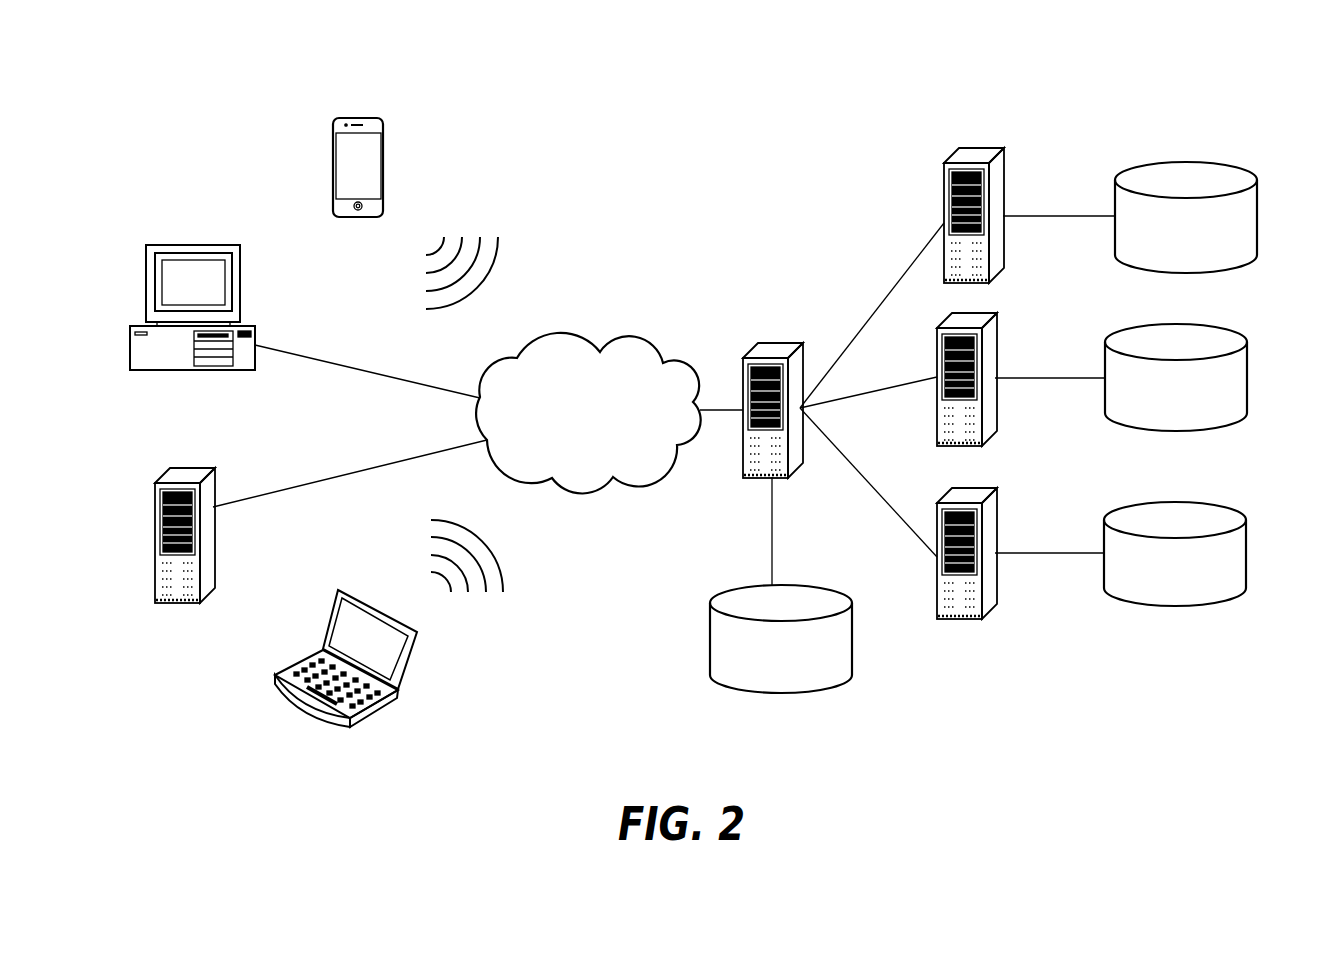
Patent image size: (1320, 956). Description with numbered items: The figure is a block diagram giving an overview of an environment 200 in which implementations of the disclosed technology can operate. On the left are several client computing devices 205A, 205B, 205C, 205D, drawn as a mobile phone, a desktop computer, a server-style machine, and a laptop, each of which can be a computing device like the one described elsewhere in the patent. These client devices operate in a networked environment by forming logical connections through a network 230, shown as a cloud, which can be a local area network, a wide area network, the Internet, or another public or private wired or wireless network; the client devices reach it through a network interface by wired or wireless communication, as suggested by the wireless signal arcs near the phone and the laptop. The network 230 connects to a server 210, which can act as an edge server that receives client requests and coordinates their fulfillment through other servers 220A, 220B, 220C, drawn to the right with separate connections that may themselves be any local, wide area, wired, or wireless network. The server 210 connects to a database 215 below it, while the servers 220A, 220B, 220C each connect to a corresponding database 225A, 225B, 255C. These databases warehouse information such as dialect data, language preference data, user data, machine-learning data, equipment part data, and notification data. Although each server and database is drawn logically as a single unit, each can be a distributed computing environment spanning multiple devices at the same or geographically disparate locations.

The environment 200 is at (798, 121).
The client computing device 205A is at (383, 121).
The client computing device 205B is at (233, 246).
The client computing device 205C is at (205, 470).
The client computing device 205D is at (414, 662).
The server 210 is at (780, 343).
The database 215 is at (835, 586).
The server 220A is at (1003, 149).
The server 220B is at (995, 314).
The server 220C is at (995, 490).
The database 225A is at (1183, 160).
The database 225B is at (1173, 321).
The database 255C is at (1172, 499).
The network 230 is at (647, 338).